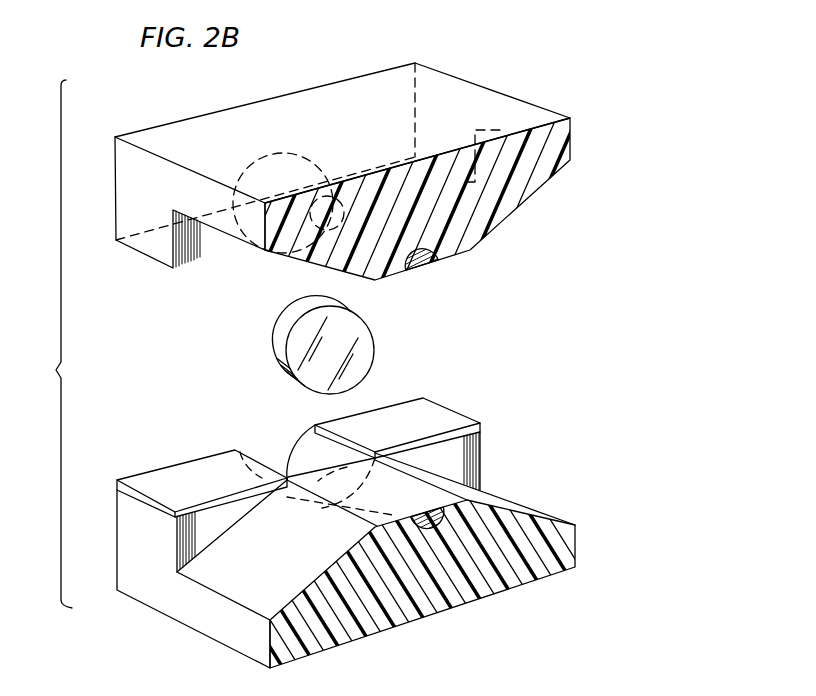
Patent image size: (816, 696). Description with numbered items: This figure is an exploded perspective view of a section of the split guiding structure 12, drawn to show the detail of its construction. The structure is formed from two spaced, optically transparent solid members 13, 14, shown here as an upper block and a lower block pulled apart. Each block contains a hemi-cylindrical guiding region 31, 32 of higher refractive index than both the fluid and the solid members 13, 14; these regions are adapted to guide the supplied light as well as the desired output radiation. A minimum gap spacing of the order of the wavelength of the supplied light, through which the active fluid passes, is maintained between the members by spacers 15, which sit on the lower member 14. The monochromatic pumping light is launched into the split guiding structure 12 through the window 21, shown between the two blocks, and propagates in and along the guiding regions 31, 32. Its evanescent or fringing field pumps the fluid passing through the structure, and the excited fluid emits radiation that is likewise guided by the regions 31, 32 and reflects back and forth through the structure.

The split guiding structure 12 is at (34, 323).
The solid member 13 is at (512, 103).
The solid member 14 is at (572, 543).
The spacer 15 is at (500, 402).
The window 21 is at (371, 349).
The guiding region 31 is at (432, 260).
The guiding region 32 is at (439, 523).